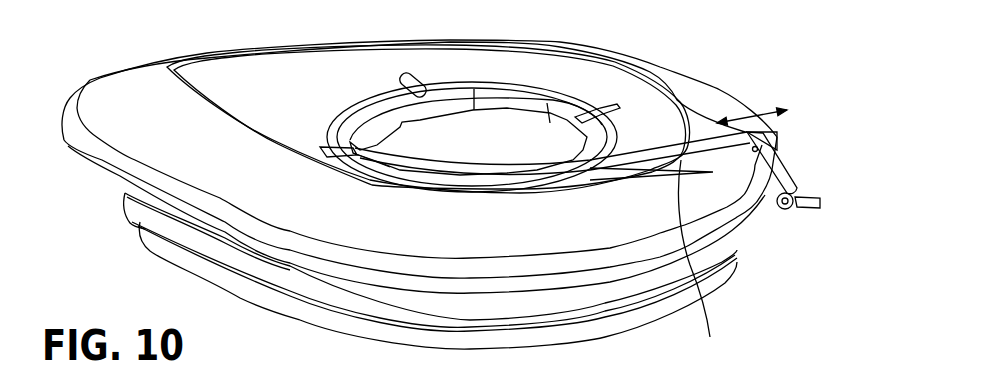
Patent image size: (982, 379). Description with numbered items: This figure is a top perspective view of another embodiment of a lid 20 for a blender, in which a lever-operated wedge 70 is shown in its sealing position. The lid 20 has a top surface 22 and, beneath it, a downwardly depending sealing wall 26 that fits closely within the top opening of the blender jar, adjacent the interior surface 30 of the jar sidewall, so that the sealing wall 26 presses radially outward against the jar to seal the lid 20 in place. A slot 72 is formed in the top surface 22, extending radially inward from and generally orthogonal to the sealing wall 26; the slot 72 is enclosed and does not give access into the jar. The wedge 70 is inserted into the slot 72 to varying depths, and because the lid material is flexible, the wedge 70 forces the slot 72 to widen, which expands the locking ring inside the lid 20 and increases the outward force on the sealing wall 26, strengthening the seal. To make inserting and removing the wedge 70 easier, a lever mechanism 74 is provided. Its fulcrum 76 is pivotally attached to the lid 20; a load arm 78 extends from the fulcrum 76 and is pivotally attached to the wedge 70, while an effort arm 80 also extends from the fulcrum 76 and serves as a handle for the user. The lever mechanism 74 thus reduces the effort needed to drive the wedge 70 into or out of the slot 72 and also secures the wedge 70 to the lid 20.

The lid 20 is at (683, 50).
The top surface 22 is at (708, 114).
The sealing wall 26 is at (651, 292).
The interior surface 30 is at (730, 265).
The wedge 70 is at (723, 150).
The slot 72 is at (704, 268).
The lever mechanism 74 is at (573, 157).
The fulcrum 76 is at (792, 210).
The load arm 78 is at (770, 157).
The effort arm 80 is at (821, 203).